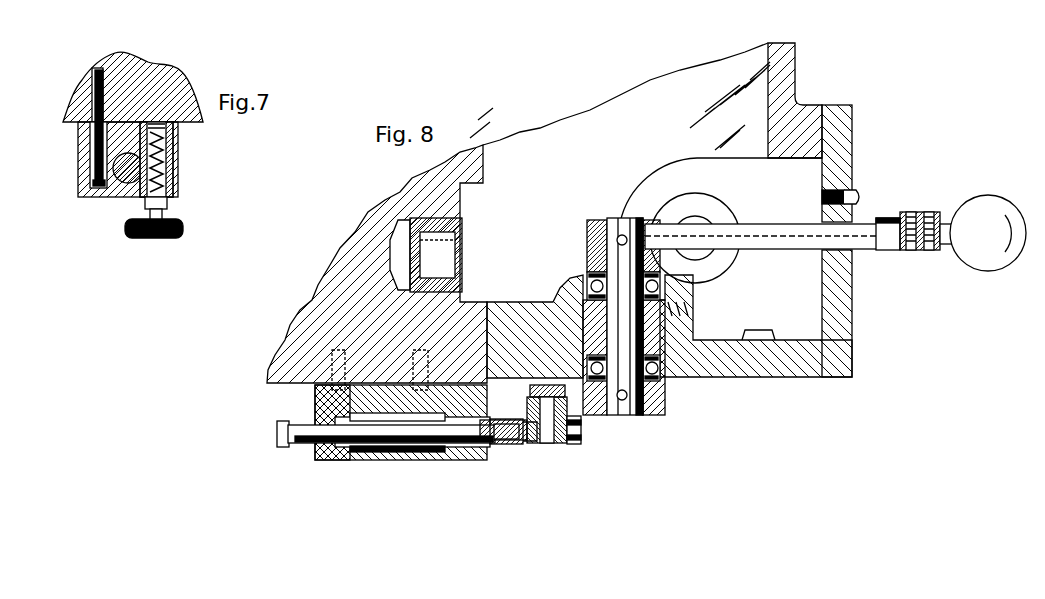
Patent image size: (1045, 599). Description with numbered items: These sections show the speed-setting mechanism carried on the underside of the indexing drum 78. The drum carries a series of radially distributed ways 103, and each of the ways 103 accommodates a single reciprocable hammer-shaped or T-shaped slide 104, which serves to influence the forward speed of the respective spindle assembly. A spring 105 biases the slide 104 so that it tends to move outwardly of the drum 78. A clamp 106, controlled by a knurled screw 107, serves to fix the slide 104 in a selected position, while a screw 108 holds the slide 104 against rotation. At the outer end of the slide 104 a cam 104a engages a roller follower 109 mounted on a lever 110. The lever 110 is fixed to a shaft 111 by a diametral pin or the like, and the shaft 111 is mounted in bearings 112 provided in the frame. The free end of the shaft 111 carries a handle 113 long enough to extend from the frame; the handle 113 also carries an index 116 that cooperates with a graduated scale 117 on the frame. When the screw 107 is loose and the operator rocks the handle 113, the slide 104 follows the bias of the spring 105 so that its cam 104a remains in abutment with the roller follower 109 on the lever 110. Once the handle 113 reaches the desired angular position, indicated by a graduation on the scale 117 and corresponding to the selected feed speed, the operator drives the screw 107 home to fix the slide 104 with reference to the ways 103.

In FIG. 7, the indexing drum 78 is at (160, 72).
In FIG. 8, the indexing drum 78 is at (338, 332).
In FIG. 7, the ways 103 is at (78, 154).
In FIG. 8, the ways 103 is at (315, 400).
In FIG. 7, the slide 104 is at (128, 178).
In FIG. 8, the slide 104 is at (298, 450).
In FIG. 8, the cam 104a is at (500, 445).
In FIG. 8, the spring 105 is at (405, 455).
In FIG. 7, the clamp 106 is at (176, 152).
In FIG. 7, the knurled screw 107 is at (185, 224).
In FIG. 8, the screw 108 is at (480, 394).
In FIG. 8, the roller follower 109 is at (533, 445).
In FIG. 8, the lever 110 is at (660, 412).
In FIG. 8, the shaft 111 is at (620, 416).
In FIG. 8, the bearings 112 is at (668, 287).
In FIG. 8, the handle 113 is at (783, 250).
In FIG. 8, the index 116 is at (902, 222).
In FIG. 8, the graduated scale 117 is at (875, 222).